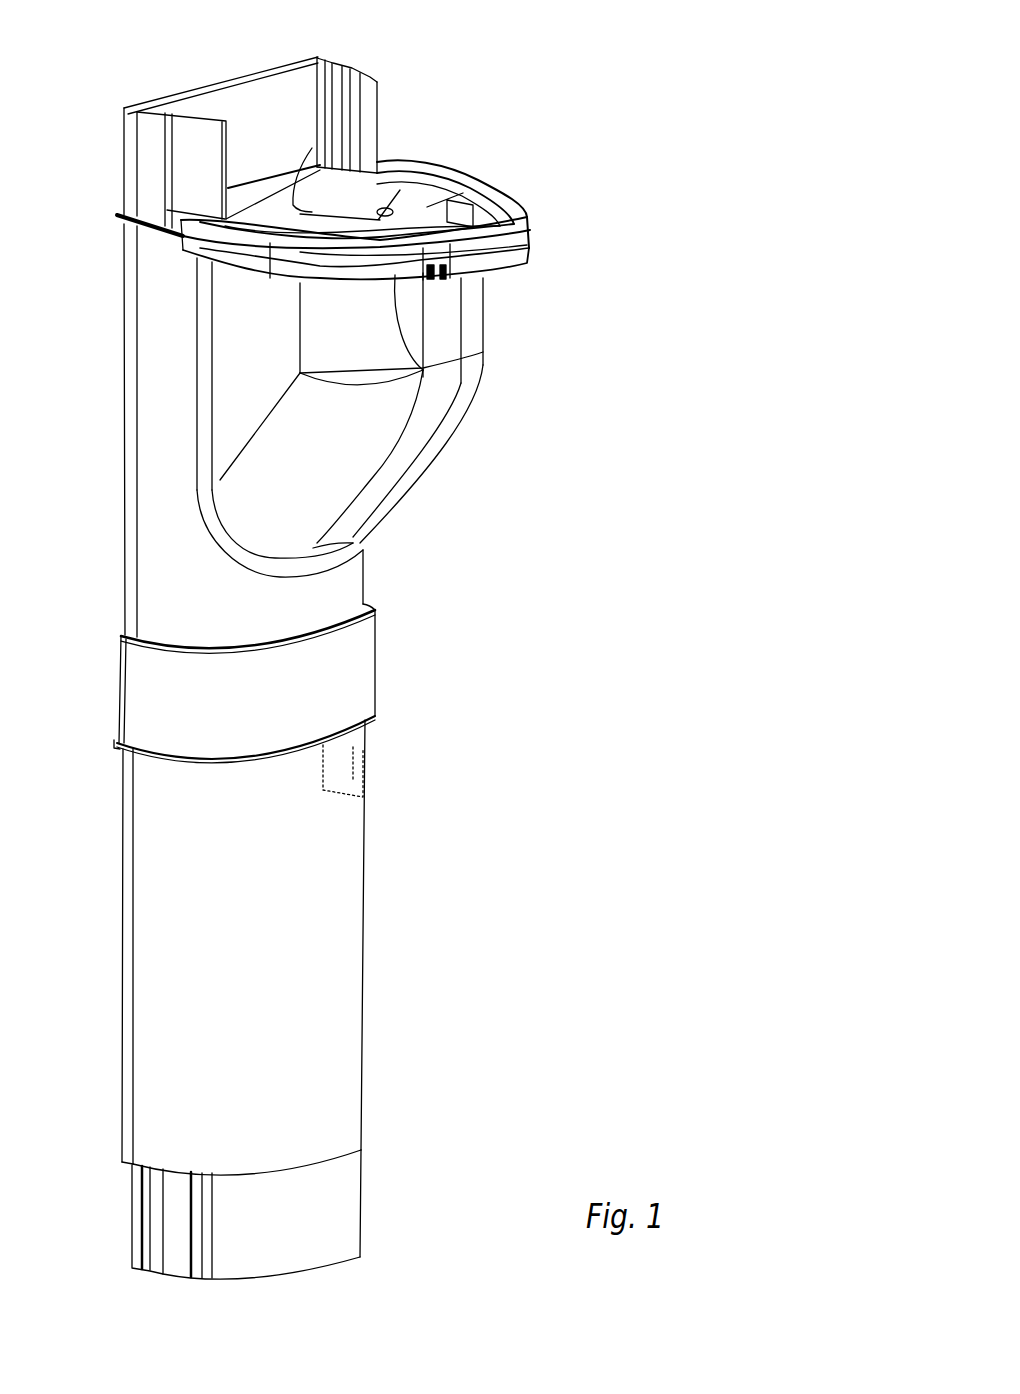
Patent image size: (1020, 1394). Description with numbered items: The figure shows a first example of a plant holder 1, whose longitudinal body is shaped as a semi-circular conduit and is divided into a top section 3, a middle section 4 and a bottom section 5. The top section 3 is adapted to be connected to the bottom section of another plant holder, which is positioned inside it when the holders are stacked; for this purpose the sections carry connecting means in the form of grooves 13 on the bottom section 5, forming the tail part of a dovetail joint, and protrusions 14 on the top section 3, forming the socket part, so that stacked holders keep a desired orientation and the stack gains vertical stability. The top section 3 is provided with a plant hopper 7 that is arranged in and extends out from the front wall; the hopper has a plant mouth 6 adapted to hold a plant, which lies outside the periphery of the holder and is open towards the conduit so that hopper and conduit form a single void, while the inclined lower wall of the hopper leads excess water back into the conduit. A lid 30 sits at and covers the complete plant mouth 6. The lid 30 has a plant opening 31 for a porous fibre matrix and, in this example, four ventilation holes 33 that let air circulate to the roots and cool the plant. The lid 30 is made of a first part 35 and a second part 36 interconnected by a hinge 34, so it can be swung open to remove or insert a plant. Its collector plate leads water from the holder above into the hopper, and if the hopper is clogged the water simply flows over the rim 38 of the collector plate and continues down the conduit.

The plant holder 1 is at (676, 85).
The top section 3 is at (495, 230).
The middle section 4 is at (463, 693).
The bottom section 5 is at (453, 1172).
The plant mouth 6 is at (497, 150).
The plant hopper 7 is at (393, 468).
The grooves 13 is at (160, 1229).
The protrusions 14 is at (357, 67).
The lid 30 is at (522, 222).
The plant opening 31 is at (430, 206).
The ventilation holes 33 is at (490, 203).
The hinge 34 is at (430, 278).
The first part 35 is at (423, 369).
The second part 36 is at (503, 253).
The rim of the collector plate 38 is at (302, 158).